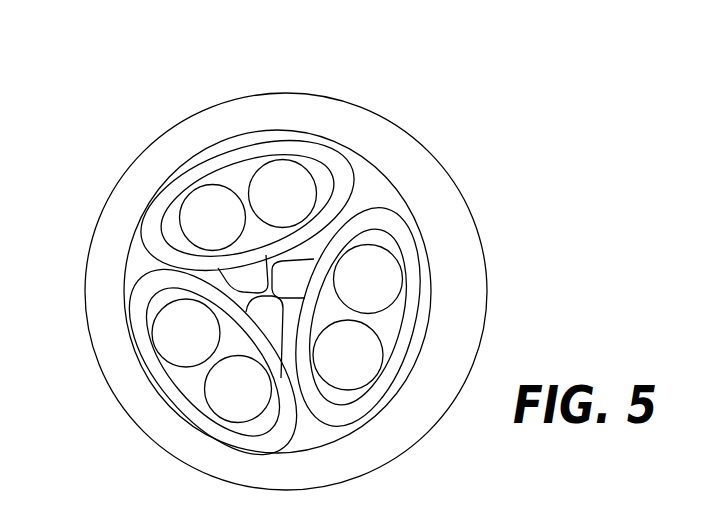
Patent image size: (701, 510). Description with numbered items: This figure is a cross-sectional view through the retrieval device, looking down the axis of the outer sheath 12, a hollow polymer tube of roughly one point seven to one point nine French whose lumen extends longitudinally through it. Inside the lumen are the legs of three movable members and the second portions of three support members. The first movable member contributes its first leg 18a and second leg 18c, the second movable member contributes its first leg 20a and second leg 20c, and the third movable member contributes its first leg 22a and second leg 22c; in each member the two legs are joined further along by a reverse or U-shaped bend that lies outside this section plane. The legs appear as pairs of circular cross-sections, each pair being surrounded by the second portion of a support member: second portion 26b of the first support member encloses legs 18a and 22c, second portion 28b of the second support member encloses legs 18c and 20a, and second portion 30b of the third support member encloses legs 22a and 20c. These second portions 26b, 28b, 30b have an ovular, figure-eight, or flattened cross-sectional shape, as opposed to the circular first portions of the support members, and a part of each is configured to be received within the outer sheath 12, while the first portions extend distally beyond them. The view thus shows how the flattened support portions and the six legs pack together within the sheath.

The outer sheath 12 is at (143, 402).
The first leg of first movable member 18a is at (227, 227).
The second leg of first movable member 18c is at (200, 344).
The first leg of second movable member 20a is at (255, 402).
The second leg of second movable member 20c is at (362, 366).
The first leg of third movable member 22a is at (385, 289).
The second leg of third movable member 22c is at (298, 205).
The second portion of first support member 26b is at (243, 181).
The second portion of second support member 28b is at (200, 375).
The second portion of third support member 30b is at (383, 317).